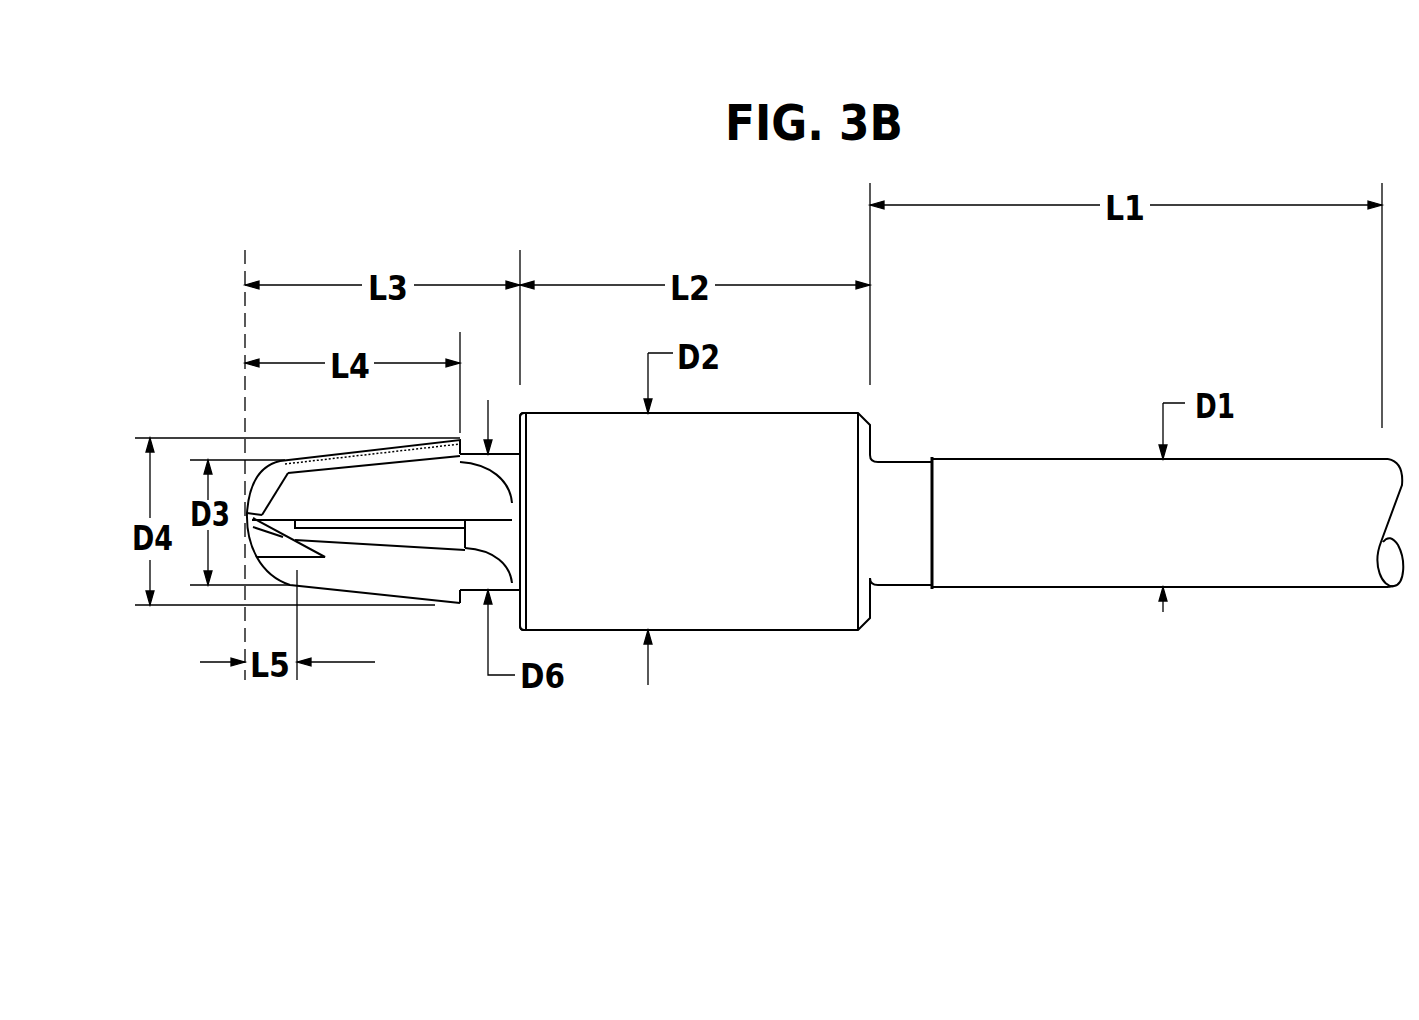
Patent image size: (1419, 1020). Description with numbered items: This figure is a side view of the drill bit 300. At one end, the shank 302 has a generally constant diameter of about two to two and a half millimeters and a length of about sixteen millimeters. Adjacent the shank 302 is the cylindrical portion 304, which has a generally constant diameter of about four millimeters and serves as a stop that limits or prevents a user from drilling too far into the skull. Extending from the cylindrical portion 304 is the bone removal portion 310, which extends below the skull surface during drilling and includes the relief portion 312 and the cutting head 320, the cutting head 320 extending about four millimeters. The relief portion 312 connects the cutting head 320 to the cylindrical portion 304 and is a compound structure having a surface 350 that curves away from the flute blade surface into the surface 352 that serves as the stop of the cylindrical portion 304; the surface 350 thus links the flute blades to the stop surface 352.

The drill bit 300 is at (1110, 326).
The shank 302 is at (1292, 480).
The cylindrical portion 304 is at (837, 615).
The bone removal portion 310 is at (355, 493).
The relief portion 312 is at (520, 713).
The cutting head 320 is at (460, 713).
The surface 350 is at (487, 578).
The surface 352 is at (517, 433).